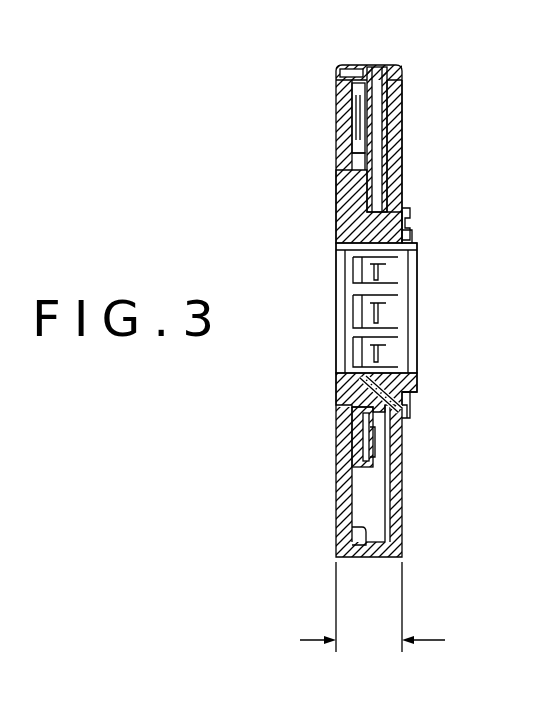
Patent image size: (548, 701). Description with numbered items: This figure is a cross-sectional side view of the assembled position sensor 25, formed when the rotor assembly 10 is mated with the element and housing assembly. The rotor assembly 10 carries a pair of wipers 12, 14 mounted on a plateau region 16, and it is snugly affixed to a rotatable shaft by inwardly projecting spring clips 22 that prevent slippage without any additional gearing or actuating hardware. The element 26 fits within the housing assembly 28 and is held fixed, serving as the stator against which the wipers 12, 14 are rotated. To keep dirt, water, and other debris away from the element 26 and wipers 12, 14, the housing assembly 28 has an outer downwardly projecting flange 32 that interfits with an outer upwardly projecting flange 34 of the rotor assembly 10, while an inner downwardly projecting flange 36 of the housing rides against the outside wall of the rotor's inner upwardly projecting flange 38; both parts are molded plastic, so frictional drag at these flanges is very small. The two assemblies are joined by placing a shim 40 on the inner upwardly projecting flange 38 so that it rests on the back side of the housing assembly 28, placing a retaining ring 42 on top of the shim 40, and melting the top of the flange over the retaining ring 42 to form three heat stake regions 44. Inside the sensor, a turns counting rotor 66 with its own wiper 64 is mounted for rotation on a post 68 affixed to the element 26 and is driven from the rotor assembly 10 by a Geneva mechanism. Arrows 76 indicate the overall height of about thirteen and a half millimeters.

The rotor assembly 10 is at (333, 118).
The wiper 12 is at (340, 452).
The wiper 14 is at (340, 420).
The plateau region 16 is at (355, 172).
The spring clips 22 is at (345, 300).
The position sensor 25 is at (285, 191).
The element 26 is at (404, 80).
The housing assembly 28 is at (412, 99).
The outer downwardly projecting flange 32 is at (366, 558).
The outer upwardly projecting flange 34 is at (352, 531).
The inner downwardly projecting flange 36 is at (409, 420).
The inner upwardly projecting flange 38 is at (404, 392).
The shim 40 is at (406, 222).
The retaining ring 42 is at (420, 405).
The heat stake regions 44 is at (426, 229).
The wiper 64 is at (373, 66).
The turns counting rotor 66 is at (340, 84).
The post 68 is at (404, 122).
The arrows 76 is at (430, 636).